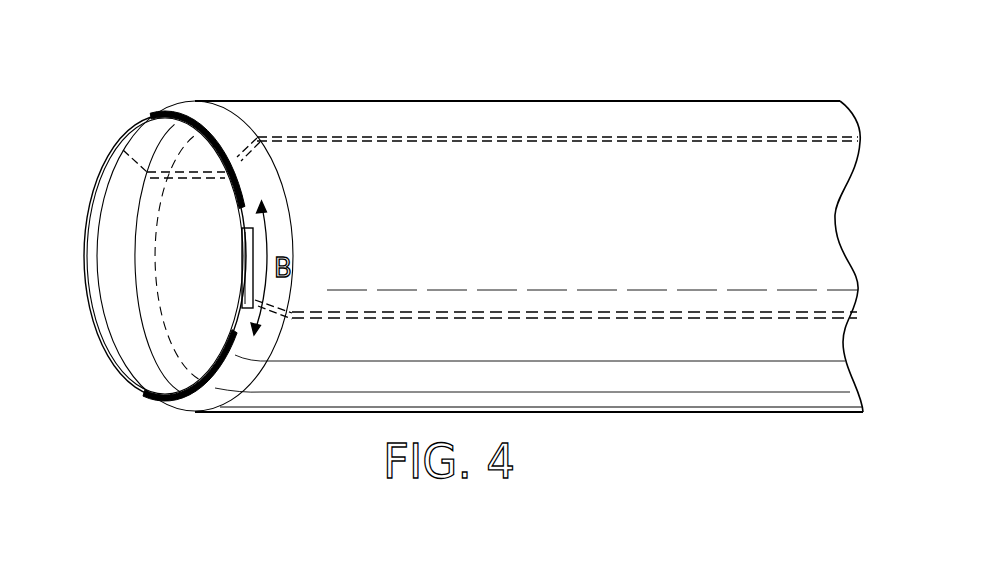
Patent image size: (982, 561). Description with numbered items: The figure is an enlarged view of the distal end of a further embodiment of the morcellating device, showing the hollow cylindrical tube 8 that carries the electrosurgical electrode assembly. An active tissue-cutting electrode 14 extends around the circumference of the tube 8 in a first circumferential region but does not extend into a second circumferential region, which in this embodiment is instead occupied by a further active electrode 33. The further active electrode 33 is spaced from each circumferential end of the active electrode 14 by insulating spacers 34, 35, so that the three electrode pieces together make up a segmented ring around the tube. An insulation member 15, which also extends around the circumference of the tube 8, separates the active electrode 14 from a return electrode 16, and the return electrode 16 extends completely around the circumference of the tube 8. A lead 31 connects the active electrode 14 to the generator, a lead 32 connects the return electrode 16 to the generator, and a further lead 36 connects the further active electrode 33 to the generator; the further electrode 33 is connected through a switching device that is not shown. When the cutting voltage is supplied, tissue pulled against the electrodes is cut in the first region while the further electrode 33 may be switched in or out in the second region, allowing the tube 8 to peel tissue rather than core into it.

The cylindrical tube 8 is at (713, 101).
The active tissue-cutting electrode 14 is at (102, 353).
The insulation member 15 is at (152, 378).
The return electrode 16 is at (173, 140).
The lead 31 is at (504, 135).
The lead 32 is at (123, 150).
The further active electrode 33 is at (243, 270).
The insulating spacer 34 is at (242, 219).
The insulating spacer 35 is at (240, 322).
The further lead 36 is at (622, 318).